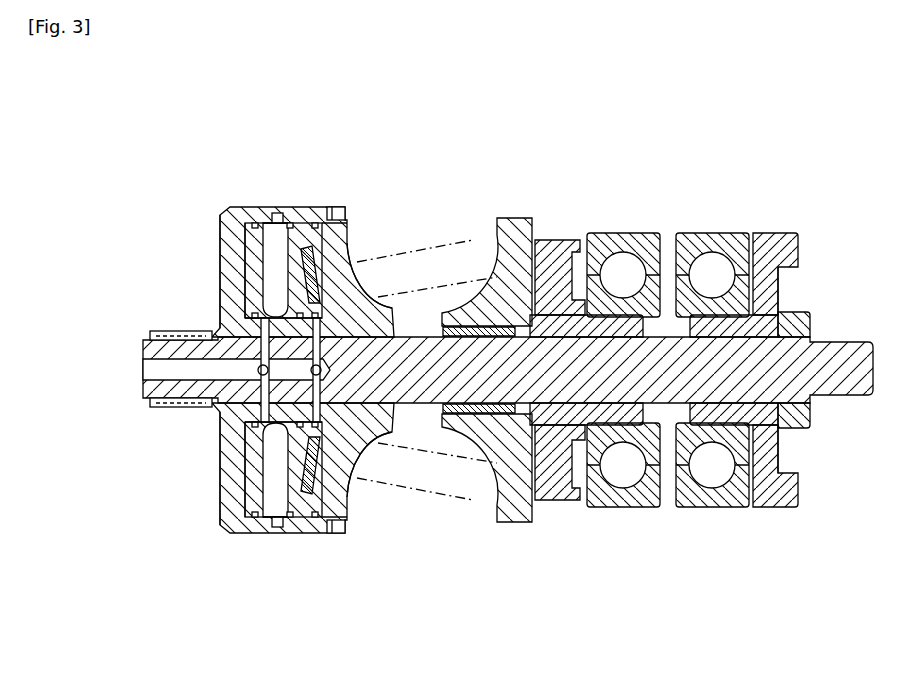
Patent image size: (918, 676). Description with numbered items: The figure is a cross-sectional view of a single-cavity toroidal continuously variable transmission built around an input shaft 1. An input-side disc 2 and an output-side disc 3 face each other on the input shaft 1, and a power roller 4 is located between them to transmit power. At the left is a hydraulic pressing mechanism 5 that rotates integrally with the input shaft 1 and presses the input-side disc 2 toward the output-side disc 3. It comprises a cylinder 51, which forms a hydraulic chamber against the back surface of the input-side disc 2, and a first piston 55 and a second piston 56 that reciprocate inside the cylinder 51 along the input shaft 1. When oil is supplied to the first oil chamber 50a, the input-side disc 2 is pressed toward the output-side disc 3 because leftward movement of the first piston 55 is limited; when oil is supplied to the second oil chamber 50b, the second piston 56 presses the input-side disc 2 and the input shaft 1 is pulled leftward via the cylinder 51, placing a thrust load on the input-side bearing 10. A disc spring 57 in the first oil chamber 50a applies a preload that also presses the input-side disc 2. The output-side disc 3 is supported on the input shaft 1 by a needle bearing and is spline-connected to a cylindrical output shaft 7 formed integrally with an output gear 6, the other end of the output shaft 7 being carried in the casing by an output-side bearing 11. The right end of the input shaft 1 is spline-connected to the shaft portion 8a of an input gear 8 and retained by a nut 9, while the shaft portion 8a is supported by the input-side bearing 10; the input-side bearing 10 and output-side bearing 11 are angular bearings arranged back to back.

The input shaft 1 is at (857, 342).
The input-side disc 2 is at (363, 497).
The output-side disc 3 is at (523, 512).
The power roller 4 is at (497, 232).
The pressing mechanism 5 is at (240, 207).
The output gear 6 is at (562, 240).
The output shaft 7 is at (624, 330).
The input gear 8 is at (778, 243).
The shaft portion 8a is at (779, 307).
The nut 9 is at (812, 428).
The input-side bearing 10 is at (715, 233).
The output-side bearing 11 is at (643, 233).
The first oil chamber 50a is at (352, 222).
The second oil chamber 50b is at (247, 296).
The cylinder 51 is at (220, 240).
The first piston 55 is at (275, 213).
The second piston 56 is at (252, 268).
The disc spring 57 is at (322, 262).